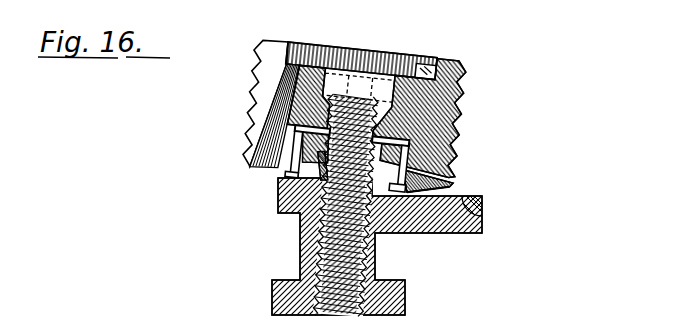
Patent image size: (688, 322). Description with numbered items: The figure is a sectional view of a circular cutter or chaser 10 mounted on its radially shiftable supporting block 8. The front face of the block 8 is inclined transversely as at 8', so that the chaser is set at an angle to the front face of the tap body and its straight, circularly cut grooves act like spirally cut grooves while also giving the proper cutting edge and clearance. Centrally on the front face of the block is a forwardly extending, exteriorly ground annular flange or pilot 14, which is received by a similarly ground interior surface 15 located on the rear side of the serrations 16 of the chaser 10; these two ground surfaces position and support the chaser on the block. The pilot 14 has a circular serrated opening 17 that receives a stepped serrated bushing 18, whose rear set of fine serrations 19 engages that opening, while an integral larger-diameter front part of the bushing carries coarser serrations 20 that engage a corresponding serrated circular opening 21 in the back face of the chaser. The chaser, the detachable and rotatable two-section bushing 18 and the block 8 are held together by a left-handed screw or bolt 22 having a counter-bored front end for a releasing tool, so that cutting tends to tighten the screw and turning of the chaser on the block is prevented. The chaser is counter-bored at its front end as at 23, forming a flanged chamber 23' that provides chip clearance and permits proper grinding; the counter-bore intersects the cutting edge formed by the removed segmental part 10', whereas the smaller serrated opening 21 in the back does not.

The supporting block 8 is at (345, 246).
The inclined front face of supporting block 8' is at (495, 212).
The chaser 10 is at (270, 97).
The removed segmental part of chaser 10' is at (253, 104).
The pilot 14 is at (453, 183).
The interiorly ground surface 15 is at (452, 191).
The serrations of chaser 16 is at (283, 149).
The circular serrated opening 17 is at (278, 182).
The stepped serrated bushing 18 is at (400, 132).
The fine serrations of bushing 19 is at (267, 163).
The coarse serrations of bushing 20 is at (406, 150).
The serrated circular opening of chaser 21 is at (287, 133).
The screw 22 is at (370, 82).
The counter-bore 23 is at (361, 48).
The flanged chamber 23' is at (462, 55).